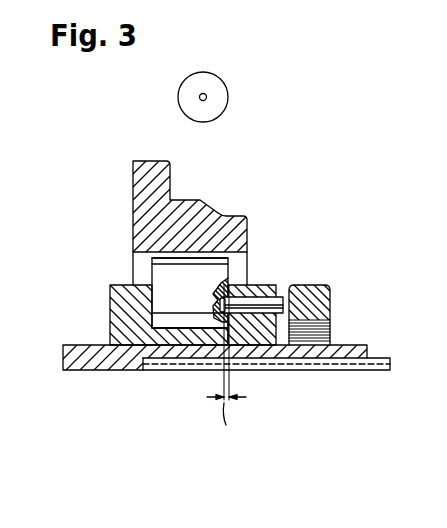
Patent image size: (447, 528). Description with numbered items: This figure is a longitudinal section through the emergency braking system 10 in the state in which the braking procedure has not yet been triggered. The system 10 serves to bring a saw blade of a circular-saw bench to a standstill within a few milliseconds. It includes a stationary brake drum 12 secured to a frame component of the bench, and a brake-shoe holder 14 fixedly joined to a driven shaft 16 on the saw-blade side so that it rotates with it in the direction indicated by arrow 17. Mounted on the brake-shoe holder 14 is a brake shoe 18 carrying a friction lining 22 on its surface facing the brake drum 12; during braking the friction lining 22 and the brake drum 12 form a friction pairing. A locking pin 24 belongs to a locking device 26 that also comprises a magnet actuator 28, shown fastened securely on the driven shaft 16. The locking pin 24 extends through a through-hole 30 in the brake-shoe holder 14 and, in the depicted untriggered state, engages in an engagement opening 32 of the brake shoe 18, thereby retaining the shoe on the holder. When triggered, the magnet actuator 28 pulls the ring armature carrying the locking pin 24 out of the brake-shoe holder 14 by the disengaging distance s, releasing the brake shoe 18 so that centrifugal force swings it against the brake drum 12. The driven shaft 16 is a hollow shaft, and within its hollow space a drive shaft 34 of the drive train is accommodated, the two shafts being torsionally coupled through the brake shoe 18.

The emergency braking system 10 is at (302, 145).
The brake drum 12 is at (140, 178).
The brake-shoe holder 14 is at (118, 310).
The driven shaft 16 is at (95, 358).
The arrow 17 is at (203, 80).
The brake shoe 18 is at (165, 280).
The friction lining 22 is at (172, 260).
The locking pin 24 is at (262, 318).
The locking device 26 is at (302, 268).
The magnet actuator 28 is at (330, 300).
The through-hole 30 is at (270, 335).
The engagement opening 32 is at (192, 318).
The drive shaft 34 is at (360, 372).